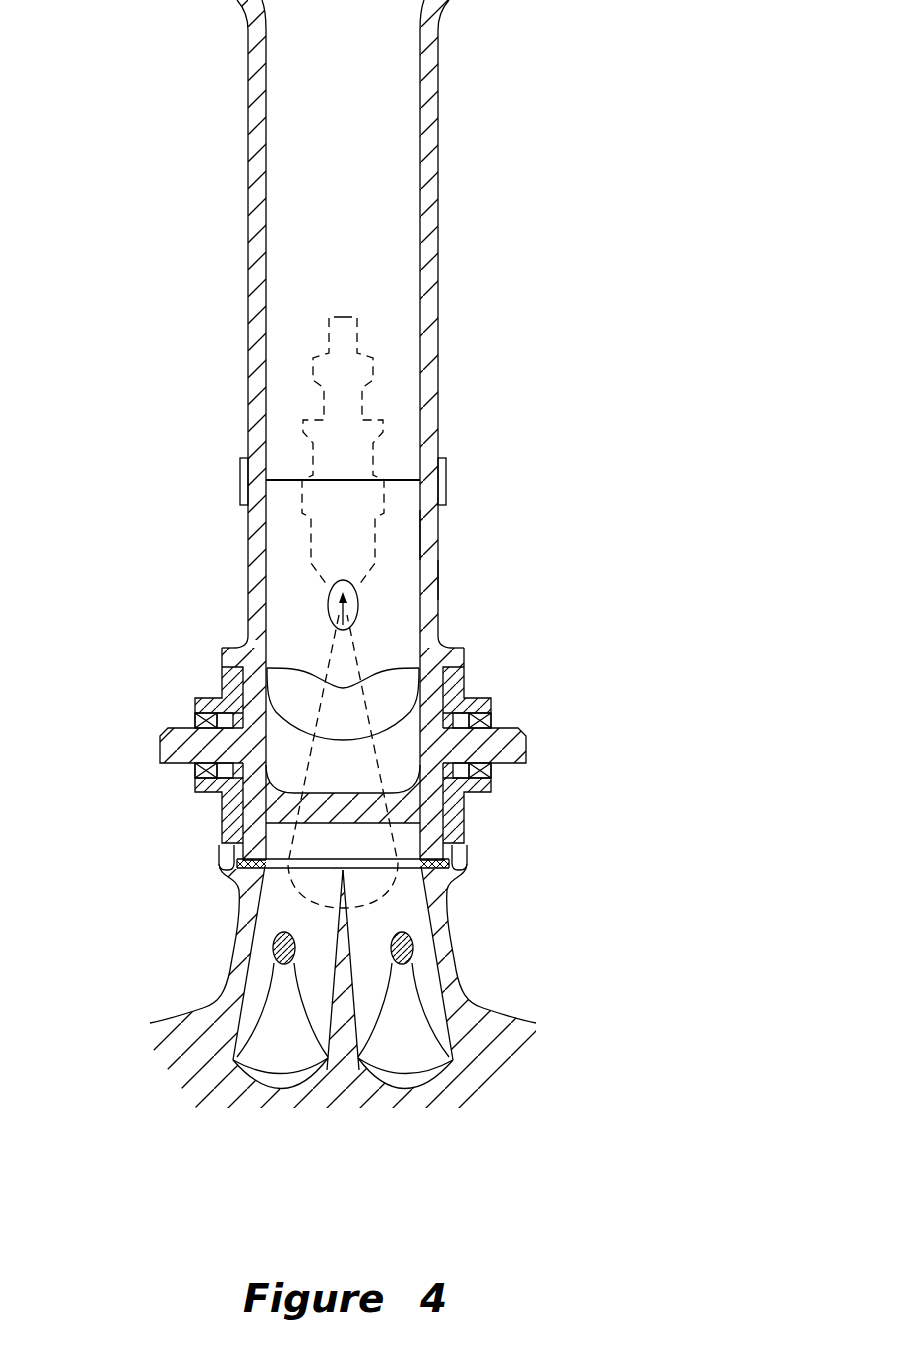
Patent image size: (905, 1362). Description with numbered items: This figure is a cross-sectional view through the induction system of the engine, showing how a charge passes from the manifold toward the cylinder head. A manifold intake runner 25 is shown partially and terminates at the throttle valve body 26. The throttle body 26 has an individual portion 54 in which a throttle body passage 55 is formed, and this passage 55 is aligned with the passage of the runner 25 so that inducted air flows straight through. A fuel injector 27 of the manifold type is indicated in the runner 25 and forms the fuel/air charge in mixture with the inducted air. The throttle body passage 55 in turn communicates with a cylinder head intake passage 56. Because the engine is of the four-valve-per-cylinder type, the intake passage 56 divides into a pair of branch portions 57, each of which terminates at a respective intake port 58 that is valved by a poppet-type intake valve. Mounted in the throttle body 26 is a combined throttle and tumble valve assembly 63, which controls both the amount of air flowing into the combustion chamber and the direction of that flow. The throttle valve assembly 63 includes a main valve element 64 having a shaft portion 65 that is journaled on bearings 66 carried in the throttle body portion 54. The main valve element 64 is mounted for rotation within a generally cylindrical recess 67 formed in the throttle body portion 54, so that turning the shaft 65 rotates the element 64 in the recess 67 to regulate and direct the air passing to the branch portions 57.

The intake runner 25 is at (437, 298).
The throttle valve body 26 is at (335, 744).
The fuel injector 27 is at (383, 430).
The individual portion of throttle body 54 is at (437, 583).
The throttle body passage 55 is at (423, 533).
The cylinder head intake passage 56 is at (420, 870).
The branch portion 57 is at (283, 910).
The intake port 58 is at (339, 1104).
The throttle and tumble valve assembly 63 is at (462, 665).
The main valve element 64 is at (405, 803).
The shaft portion 65 is at (158, 737).
The bearing 66 is at (193, 720).
The cylindrical recess 67 is at (222, 683).